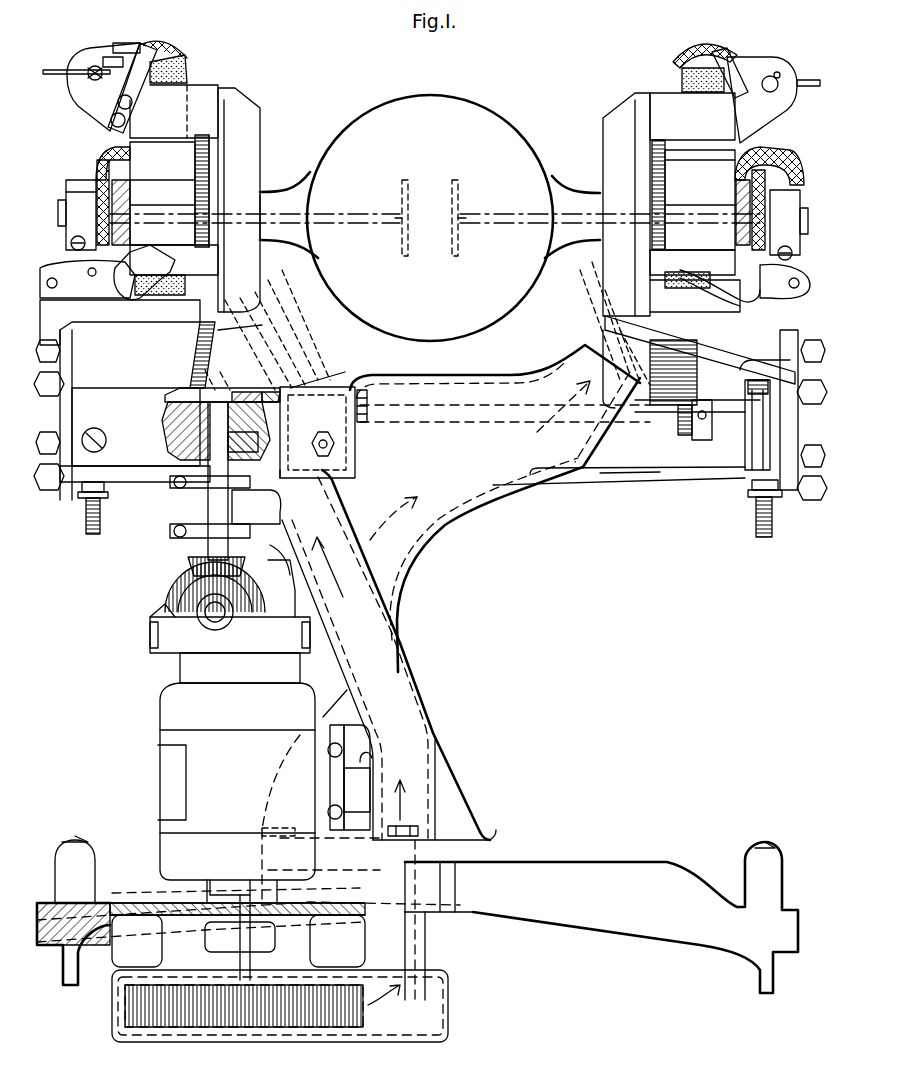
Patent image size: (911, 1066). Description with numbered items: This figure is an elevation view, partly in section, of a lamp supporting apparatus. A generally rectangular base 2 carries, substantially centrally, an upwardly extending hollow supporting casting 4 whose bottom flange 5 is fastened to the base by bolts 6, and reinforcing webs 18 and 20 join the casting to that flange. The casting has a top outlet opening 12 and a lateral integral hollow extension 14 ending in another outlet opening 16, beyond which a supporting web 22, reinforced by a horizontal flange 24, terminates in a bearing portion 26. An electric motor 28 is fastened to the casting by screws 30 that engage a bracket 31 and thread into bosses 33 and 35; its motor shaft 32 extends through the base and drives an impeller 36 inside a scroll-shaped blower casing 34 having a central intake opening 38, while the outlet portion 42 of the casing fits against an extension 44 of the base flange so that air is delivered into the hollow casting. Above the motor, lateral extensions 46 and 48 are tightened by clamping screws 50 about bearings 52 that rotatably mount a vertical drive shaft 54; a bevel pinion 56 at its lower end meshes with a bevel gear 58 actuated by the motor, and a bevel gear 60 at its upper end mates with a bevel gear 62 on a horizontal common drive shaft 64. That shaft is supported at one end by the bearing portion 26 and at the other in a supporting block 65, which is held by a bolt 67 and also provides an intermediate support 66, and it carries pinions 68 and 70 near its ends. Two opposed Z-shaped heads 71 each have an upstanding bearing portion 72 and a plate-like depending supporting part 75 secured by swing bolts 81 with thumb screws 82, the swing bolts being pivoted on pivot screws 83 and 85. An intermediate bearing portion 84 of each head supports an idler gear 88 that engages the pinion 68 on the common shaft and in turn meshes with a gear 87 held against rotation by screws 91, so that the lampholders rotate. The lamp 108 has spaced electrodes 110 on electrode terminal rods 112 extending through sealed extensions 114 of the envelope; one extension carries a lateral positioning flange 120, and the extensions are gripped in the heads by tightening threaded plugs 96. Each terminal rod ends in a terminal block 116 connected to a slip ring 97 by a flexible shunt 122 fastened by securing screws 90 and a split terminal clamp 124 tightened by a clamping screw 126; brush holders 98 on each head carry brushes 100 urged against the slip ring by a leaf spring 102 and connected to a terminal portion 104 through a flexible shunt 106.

The base 2 is at (588, 865).
The hollow supporting casting 4 is at (388, 648).
The bottom flange 5 is at (492, 846).
The bolts 6 is at (278, 824).
The top outlet opening 12 is at (290, 392).
The lateral integral hollow extension 14 is at (498, 498).
The outlet opening 16 is at (590, 356).
The reinforcing web 18 is at (455, 800).
The reinforcing web 20 is at (272, 795).
The supporting web 22 is at (668, 480).
The horizontal flange 24 is at (634, 478).
The bearing portion 26 is at (745, 462).
The electric motor 28 is at (158, 778).
The screws 30 is at (318, 745).
The bracket 31 is at (330, 720).
The motor shaft 32 is at (232, 958).
The boss 33 is at (360, 742).
The scroll-shaped blower casing 34 is at (340, 1042).
The boss 35 is at (352, 810).
The impeller 36 is at (292, 1028).
The intake opening 38 is at (235, 1040).
The outlet portion 42 is at (430, 942).
The extension 44 is at (440, 888).
The lateral extension 46 is at (265, 548).
The lateral extension 48 is at (282, 480).
The clamping screws 50 is at (174, 482).
The bearing 52 is at (240, 482).
The drive shaft 54 is at (210, 505).
The bevel pinion 56 is at (188, 560).
The bevel gear 58 is at (168, 592).
The bevel gear 60 is at (172, 446).
The bevel gear 62 is at (244, 390).
The common drive shaft 64 is at (185, 395).
The supporting block 65 is at (142, 468).
The support 66 is at (270, 390).
The bolt 67 is at (312, 446).
The pinion 68 is at (166, 425).
The pinion 70 is at (690, 442).
The head 71 is at (432, 68).
The upstanding bearing portion 72 is at (255, 128).
The depending supporting part 75 is at (72, 495).
The swing bolts 81 is at (46, 355).
The thumb screw 82 is at (50, 396).
The pivot screw 83 is at (100, 424).
The bearing portion 84 is at (72, 325).
The pivot screw 85 is at (800, 310).
The gear 87 is at (208, 165).
The idler gear 88 is at (203, 370).
The securing screws 90 is at (128, 160).
The screws 91 is at (185, 140).
The threaded plug 96 is at (90, 162).
The slip ring 97 is at (212, 182).
The brush holders 98 is at (435, 198).
The brushes 100 is at (172, 52).
The leaf spring 102 is at (130, 42).
The terminal portion 104 is at (88, 55).
The flexible shunt 106 is at (158, 43).
The lamp 108 is at (460, 105).
The electrodes 110 is at (400, 190).
The electrode terminal rods 112 is at (368, 214).
The sealed integral extensions 114 is at (285, 247).
The terminal block 116 is at (58, 210).
The lateral positioning flange 120 is at (262, 200).
The flexible shunts 122 is at (102, 150).
The common split terminal clamp 124 is at (68, 182).
The clamping screw 126 is at (70, 243).